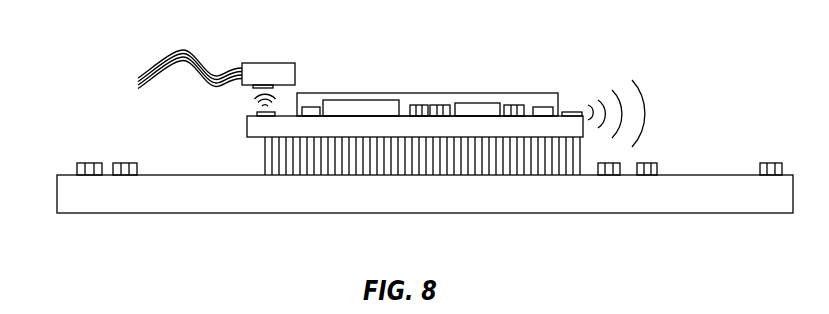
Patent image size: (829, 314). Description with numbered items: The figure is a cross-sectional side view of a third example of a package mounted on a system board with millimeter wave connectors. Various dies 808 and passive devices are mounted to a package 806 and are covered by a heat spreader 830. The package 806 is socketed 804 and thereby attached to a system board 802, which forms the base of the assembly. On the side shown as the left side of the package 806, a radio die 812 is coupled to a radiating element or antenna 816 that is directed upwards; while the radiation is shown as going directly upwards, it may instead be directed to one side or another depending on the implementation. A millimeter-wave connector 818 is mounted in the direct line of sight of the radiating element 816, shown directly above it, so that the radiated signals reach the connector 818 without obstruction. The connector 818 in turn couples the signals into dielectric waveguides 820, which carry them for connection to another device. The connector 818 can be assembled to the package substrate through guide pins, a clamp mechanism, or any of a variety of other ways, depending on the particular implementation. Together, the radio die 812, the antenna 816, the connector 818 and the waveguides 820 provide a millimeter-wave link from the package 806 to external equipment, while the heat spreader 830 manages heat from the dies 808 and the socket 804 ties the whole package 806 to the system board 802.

The system board 802 is at (542, 203).
The socket 804 is at (442, 167).
The package 806 is at (257, 132).
The dies 808 is at (375, 100).
The radio die 812 is at (308, 107).
The radiating element 816 is at (258, 113).
The millimeter-wave connector 818 is at (252, 87).
The dielectric waveguides 820 is at (165, 58).
The heat spreader 830 is at (475, 93).